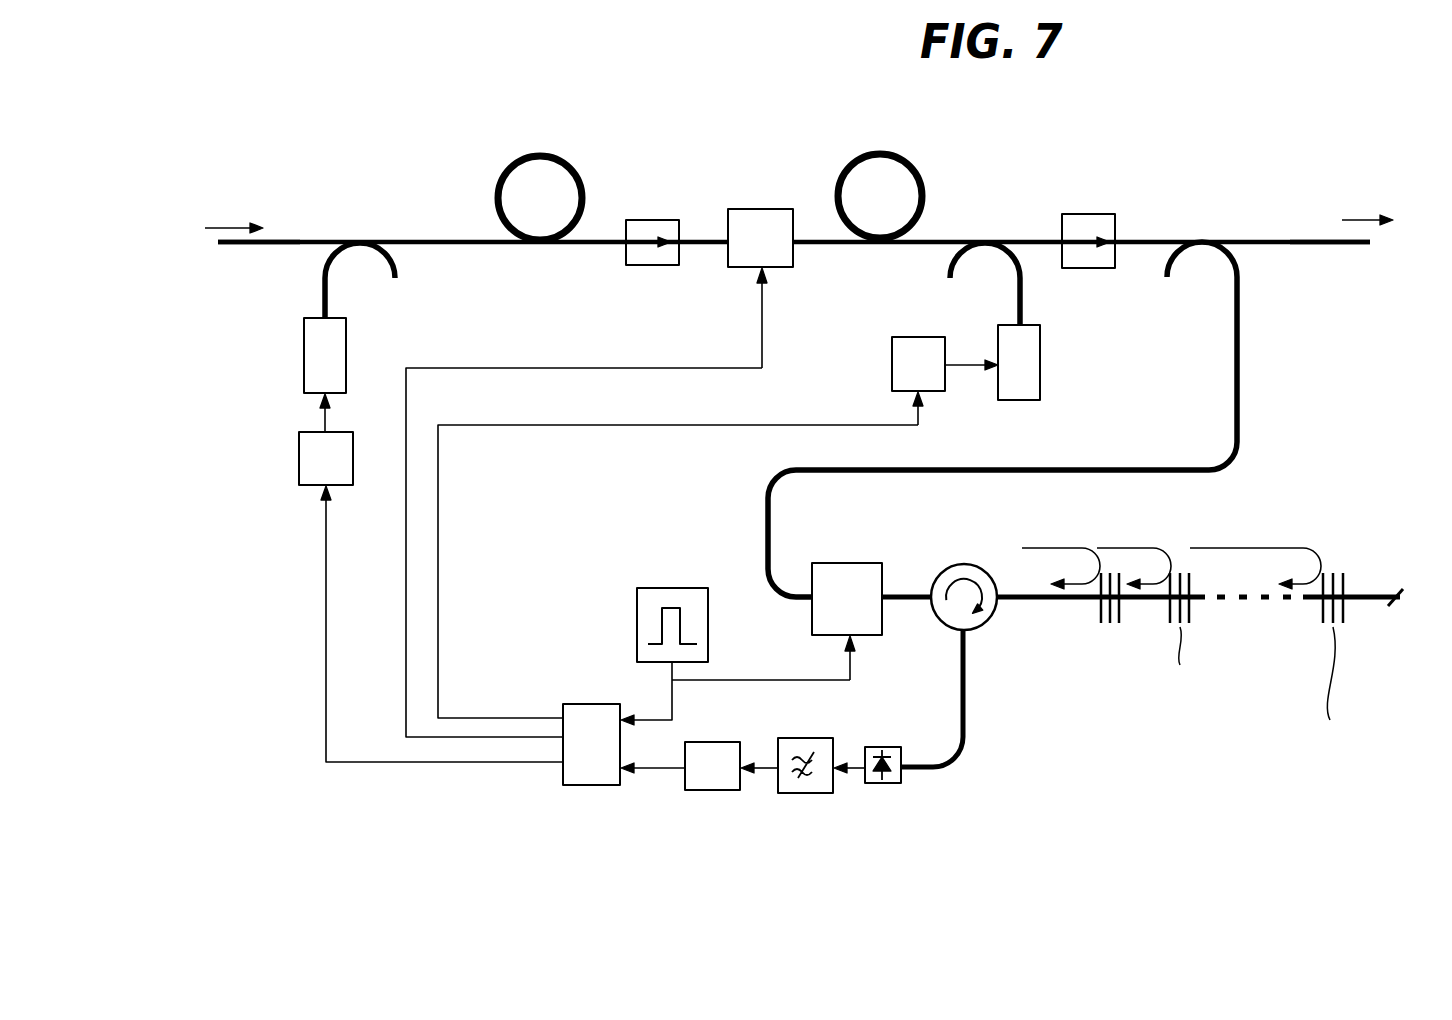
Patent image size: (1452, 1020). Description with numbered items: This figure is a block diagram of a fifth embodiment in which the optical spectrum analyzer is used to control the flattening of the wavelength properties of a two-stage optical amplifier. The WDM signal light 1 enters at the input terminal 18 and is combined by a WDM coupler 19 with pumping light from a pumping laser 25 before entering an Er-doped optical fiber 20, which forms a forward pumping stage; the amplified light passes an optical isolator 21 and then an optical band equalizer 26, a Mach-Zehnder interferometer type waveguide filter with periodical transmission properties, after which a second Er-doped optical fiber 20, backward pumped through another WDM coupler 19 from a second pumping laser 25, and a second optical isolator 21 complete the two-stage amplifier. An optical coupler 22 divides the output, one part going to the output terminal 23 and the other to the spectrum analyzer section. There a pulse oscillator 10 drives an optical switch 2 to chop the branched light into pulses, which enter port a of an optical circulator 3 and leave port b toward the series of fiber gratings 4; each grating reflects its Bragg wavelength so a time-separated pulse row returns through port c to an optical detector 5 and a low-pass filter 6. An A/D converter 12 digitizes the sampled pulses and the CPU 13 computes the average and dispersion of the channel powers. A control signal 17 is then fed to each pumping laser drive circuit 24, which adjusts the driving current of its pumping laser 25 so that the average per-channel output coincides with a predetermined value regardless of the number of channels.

The WDM signal light 1 is at (228, 227).
The optical switch 2 is at (812, 578).
The optical circulator 3 is at (990, 624).
The fiber gratings 4 is at (1333, 570).
The optical detector 5 is at (887, 783).
The low-pass filter 6 is at (805, 795).
The pulse oscillator 10 is at (637, 605).
The A/D converter 12 is at (695, 792).
The CPU 13 is at (592, 786).
The control signal 17 is at (326, 708).
The input terminal 18 is at (240, 247).
The WDM coupler 19 is at (357, 240).
The Er-doped optical fiber 20 is at (540, 153).
The optical isolator 21 is at (657, 220).
The optical coupler 22 is at (1200, 240).
The output terminal 23 is at (1277, 246).
The pumping laser drive circuit 24 is at (299, 467).
The pumping laser 25 is at (347, 352).
The optical band equalizer 26 is at (752, 209).